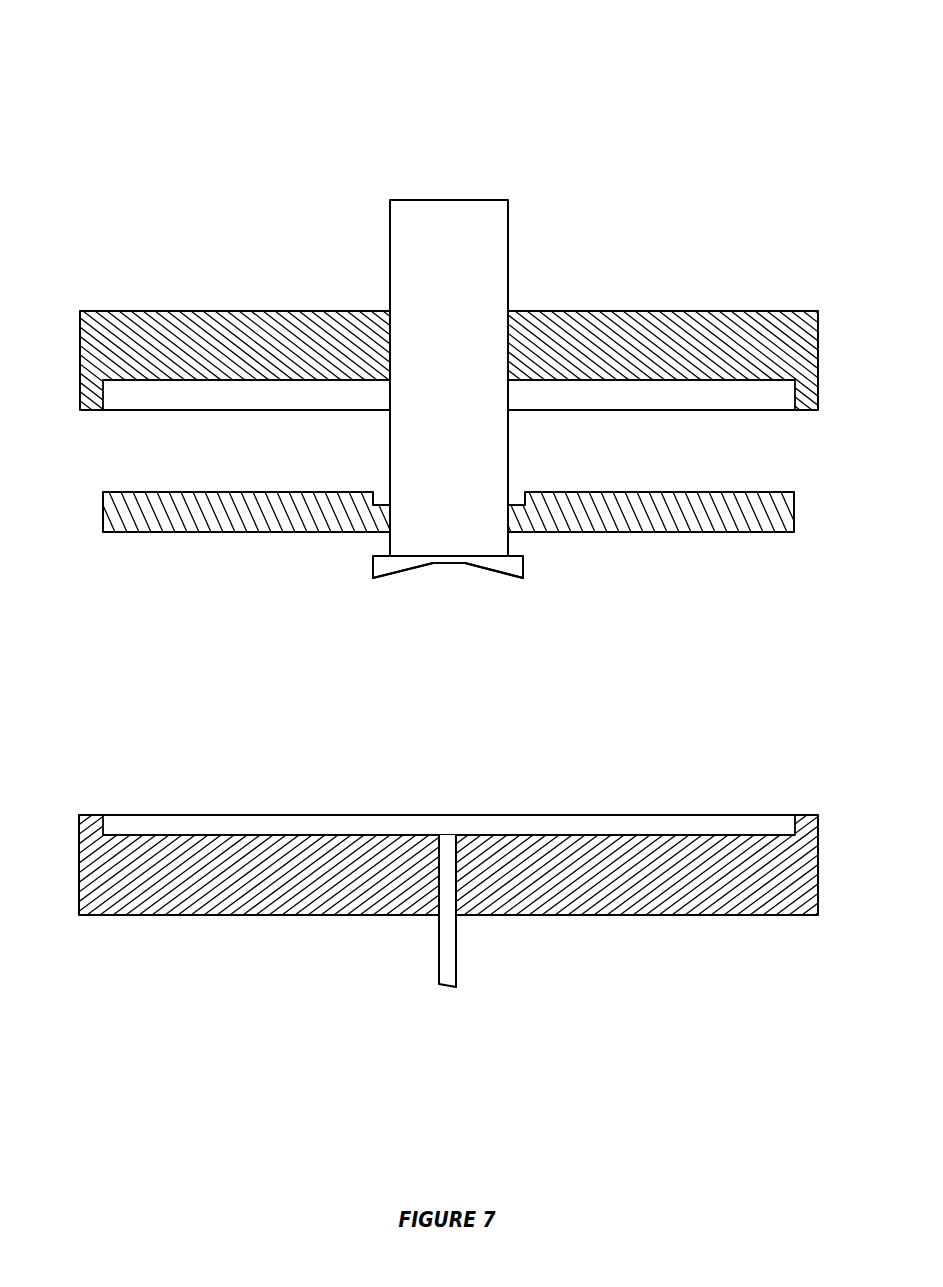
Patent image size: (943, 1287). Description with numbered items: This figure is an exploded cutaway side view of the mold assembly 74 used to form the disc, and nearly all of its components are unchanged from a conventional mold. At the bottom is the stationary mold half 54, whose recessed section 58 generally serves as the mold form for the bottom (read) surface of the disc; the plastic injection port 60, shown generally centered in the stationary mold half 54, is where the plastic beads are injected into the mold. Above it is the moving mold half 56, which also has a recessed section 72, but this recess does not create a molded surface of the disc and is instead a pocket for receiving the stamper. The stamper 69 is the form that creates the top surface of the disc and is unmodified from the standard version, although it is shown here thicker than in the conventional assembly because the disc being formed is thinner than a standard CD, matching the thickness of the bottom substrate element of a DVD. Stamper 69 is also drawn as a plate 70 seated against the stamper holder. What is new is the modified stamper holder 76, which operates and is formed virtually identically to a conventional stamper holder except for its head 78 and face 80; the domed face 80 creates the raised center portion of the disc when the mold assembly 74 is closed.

The stationary mold half 54 is at (693, 916).
The moving mold half 56 is at (172, 311).
The recessed section 58 is at (154, 805).
The plastic injection port 60 is at (456, 949).
The stamper 69 is at (795, 512).
The intermediate plate 70 is at (613, 544).
The recessed section 72 is at (147, 422).
The mold assembly 74 is at (725, 152).
The modified stamper holder 76 is at (508, 228).
The head 78 is at (373, 565).
The domed face 80 is at (447, 577).